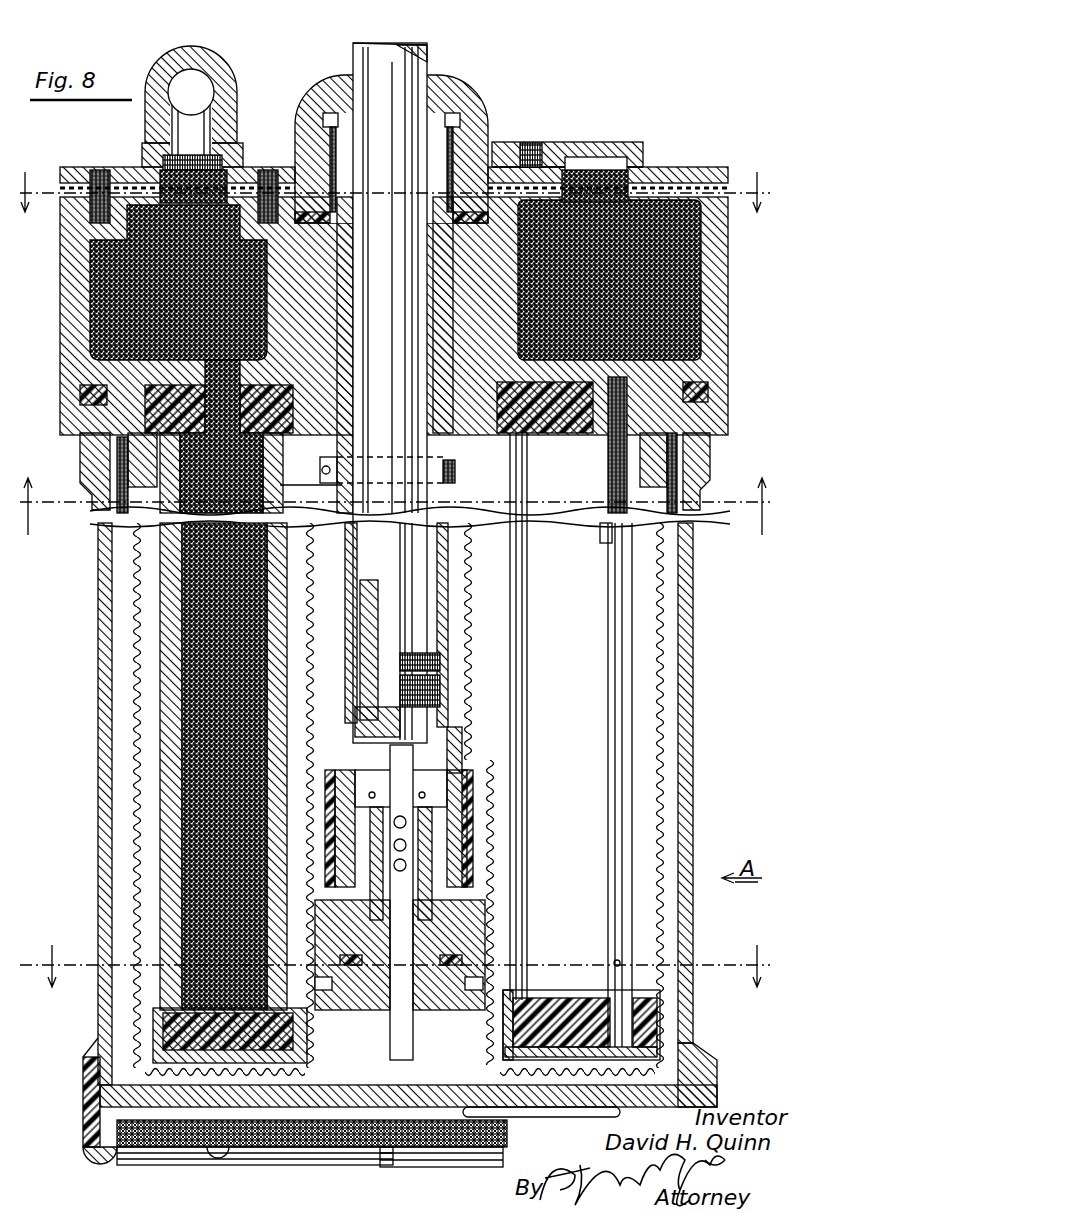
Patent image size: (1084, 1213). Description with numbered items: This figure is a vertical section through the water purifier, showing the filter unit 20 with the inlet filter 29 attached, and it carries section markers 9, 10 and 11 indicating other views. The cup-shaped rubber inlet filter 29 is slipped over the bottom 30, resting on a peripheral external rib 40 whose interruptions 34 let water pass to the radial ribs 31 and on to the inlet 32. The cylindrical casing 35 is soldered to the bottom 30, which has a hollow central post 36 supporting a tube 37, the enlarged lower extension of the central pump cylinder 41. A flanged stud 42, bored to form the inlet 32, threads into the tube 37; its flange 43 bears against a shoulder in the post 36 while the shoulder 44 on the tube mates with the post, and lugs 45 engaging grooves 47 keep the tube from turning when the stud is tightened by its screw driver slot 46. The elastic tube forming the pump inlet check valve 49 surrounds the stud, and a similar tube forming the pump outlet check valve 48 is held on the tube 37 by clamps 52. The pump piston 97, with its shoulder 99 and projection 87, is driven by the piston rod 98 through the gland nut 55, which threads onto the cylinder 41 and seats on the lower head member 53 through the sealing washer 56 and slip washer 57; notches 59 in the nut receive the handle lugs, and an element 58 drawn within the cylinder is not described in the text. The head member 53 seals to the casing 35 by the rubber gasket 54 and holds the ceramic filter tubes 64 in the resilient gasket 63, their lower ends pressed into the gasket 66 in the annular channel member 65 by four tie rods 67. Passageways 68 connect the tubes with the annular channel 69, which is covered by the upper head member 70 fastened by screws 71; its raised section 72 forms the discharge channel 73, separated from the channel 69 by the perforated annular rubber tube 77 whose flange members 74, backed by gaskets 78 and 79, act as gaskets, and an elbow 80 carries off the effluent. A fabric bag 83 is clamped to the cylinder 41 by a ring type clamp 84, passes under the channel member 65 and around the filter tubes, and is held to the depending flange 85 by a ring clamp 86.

The section line 9- 9 is at (393, 204).
The section line 10- 10 is at (398, 495).
The section line 11- 11 is at (397, 981).
The filter unit 20 is at (725, 712).
The inlet filter 29 is at (70, 1140).
The bottom 30 is at (715, 1068).
The radial ribs 31 is at (83, 1112).
The inlet 32 is at (422, 1065).
The interruptions 34 is at (214, 1160).
The cylindrical casing 35 is at (100, 728).
The hollow central post 36 is at (500, 1000).
The tube 37 is at (462, 750).
The peripheral external rib 40 is at (287, 1166).
The pump cylinder 41 is at (345, 617).
The flanged stud 42 is at (400, 1065).
The flange 43 is at (358, 1065).
The shoulder 44 is at (350, 920).
The projecting lugs 45 is at (487, 960).
The screw driver slot 46 is at (510, 1108).
The grooves 47 is at (480, 985).
The pump outlet check valve 48 is at (468, 790).
The pump inlet check valve 49 is at (425, 830).
The clamps 52 is at (478, 880).
The lower head member 53 is at (62, 260).
The rubber gasket 54 is at (706, 386).
The gland nut 55 is at (480, 105).
The sealing washer 56 is at (540, 175).
The slip washer 57 is at (465, 207).
The valve member 58 is at (418, 688).
The notches 59 is at (450, 82).
The resilient rubber gasket 63 is at (170, 385).
The ceramic filter tubes 64 is at (166, 648).
The annular channel member 65 is at (648, 1000).
The resilient imperforate gasket 66 is at (590, 1000).
The tie rods 67 is at (605, 541).
The passageways 68 is at (222, 368).
The annular channel 69 is at (90, 288).
The upper head member 70 is at (715, 167).
The screws 71 is at (95, 172).
The raised section 72 is at (600, 140).
The discharge channel 73 is at (612, 152).
The flange members 74 is at (512, 190).
The annular rubber tube 77 is at (580, 168).
The gasket 78 is at (62, 212).
The gasket 79 is at (232, 205).
The elbow 80 is at (233, 80).
The fabric bag 83 is at (310, 768).
The ring type clamp 84 is at (456, 470).
The flange 85 is at (680, 493).
The ring clamp 86 is at (710, 448).
The projection 87 is at (470, 762).
The pump piston 97 is at (358, 720).
The pump piston rod 98 is at (420, 540).
The shoulder 99 is at (358, 640).